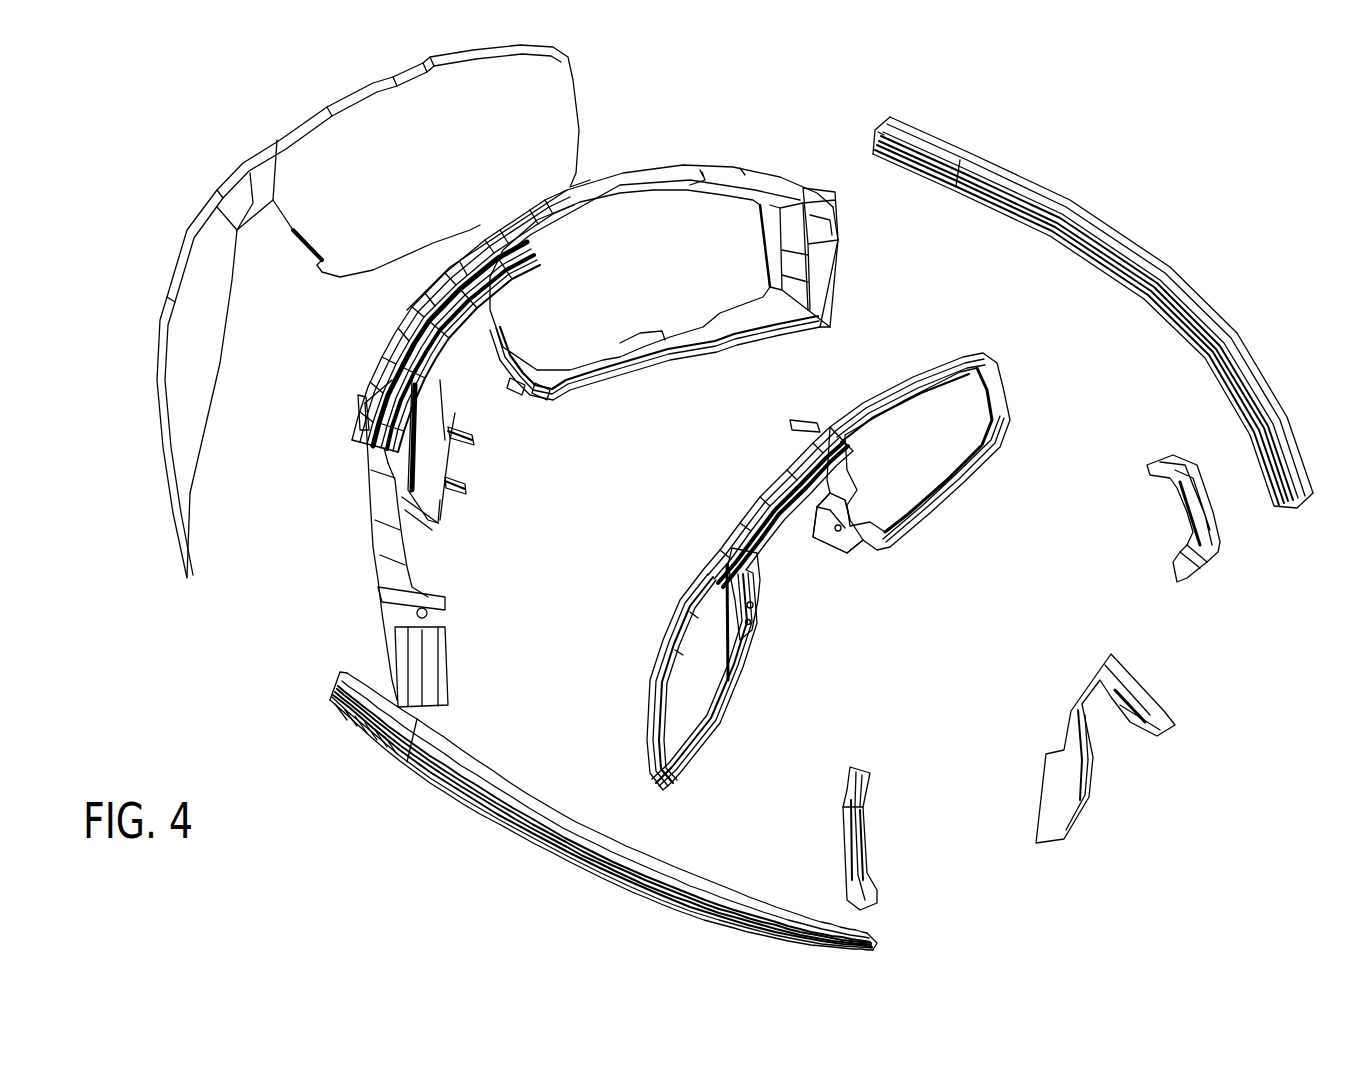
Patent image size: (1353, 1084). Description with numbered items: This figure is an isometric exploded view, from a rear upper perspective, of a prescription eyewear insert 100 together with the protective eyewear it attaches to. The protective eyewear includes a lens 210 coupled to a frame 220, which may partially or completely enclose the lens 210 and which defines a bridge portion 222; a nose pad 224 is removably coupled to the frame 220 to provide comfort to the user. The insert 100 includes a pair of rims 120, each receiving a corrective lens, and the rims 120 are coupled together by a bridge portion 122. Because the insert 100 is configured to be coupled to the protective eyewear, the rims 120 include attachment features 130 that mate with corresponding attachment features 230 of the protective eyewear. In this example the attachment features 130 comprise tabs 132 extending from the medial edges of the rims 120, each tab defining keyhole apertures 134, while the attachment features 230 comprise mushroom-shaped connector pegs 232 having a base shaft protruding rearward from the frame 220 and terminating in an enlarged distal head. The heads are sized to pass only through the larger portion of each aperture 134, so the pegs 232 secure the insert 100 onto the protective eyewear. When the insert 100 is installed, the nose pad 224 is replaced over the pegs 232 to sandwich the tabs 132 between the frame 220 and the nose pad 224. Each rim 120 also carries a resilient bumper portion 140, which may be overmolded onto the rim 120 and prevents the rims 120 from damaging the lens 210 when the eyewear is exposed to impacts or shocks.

The prescription eyewear insert 100 is at (755, 633).
The rim 120 is at (897, 380).
The bridge portion 122 is at (777, 480).
The attachment features 130 is at (911, 482).
The tabs 132 is at (820, 560).
The apertures 134 is at (753, 587).
The bumper portion 140 is at (863, 825).
The lens 210 is at (452, 172).
The frame 220 is at (705, 178).
The bridge portion 222 is at (438, 280).
The nose pad 224 is at (1086, 800).
The attachment features 230 is at (595, 415).
The connector pegs 232 is at (517, 385).